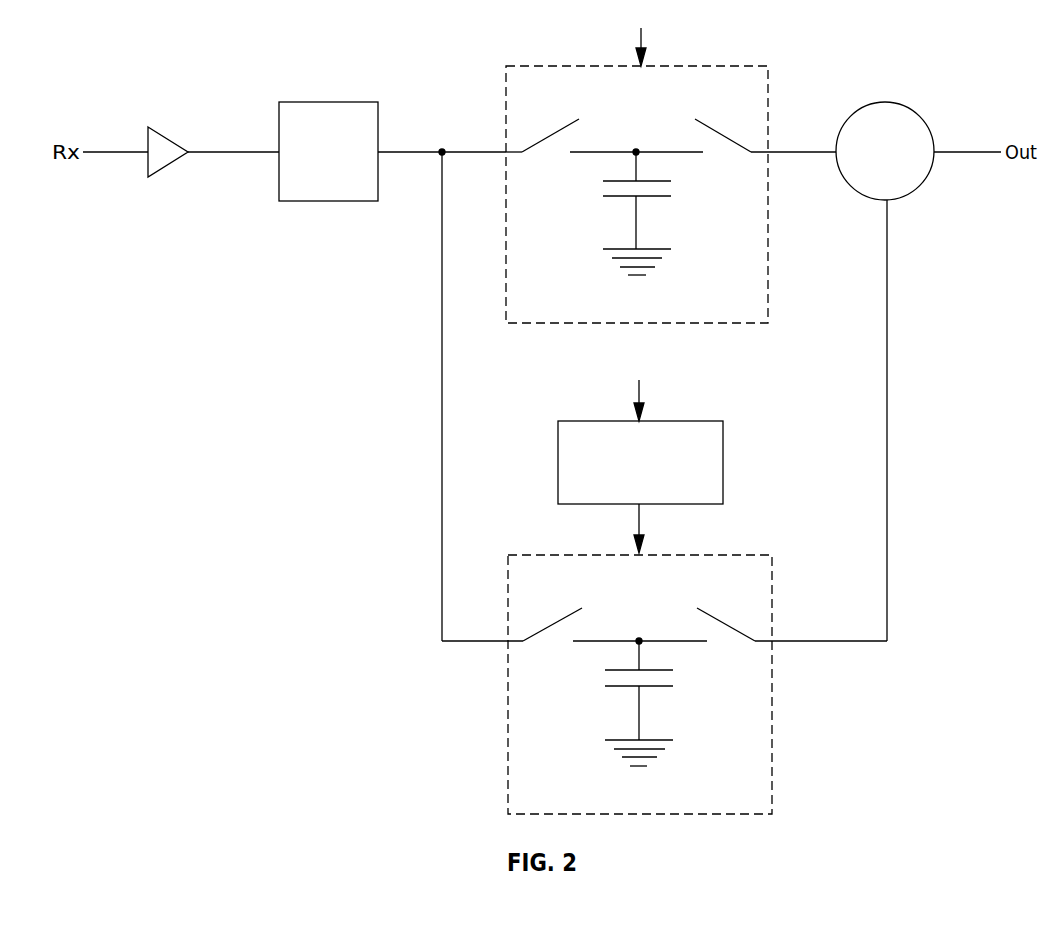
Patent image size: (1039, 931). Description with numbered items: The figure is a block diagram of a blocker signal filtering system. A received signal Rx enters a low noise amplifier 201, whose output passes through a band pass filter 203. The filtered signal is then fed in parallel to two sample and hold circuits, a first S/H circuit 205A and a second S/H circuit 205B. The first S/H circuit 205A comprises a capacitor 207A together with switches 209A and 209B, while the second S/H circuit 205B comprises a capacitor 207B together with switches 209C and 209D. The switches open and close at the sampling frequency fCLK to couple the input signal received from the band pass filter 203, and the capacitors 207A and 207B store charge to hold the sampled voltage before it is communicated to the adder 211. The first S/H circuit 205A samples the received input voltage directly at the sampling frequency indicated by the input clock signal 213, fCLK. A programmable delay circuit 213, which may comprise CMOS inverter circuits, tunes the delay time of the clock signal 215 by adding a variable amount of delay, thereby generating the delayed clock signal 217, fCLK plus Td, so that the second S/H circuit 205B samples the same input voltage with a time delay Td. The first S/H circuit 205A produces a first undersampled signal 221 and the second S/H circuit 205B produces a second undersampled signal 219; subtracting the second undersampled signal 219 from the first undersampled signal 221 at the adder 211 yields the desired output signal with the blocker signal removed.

The low noise amplifier 201 is at (158, 172).
The band pass filter 203 is at (343, 173).
The sample and hold circuit 205A is at (722, 315).
The sample and hold circuit 205B is at (723, 805).
The capacitor 207A is at (657, 196).
The capacitor 207B is at (660, 687).
The switch 209A is at (565, 127).
The switch 209B is at (703, 127).
The switch 209C is at (567, 615).
The switch 209D is at (705, 615).
The adder 211 is at (910, 108).
The programmable delay circuit 213 is at (641, 35).
The clock signal 215 is at (640, 394).
The delayed clock signal 217 is at (640, 522).
The second undersampled signal 219 is at (838, 640).
The first undersampled signal 221 is at (816, 150).